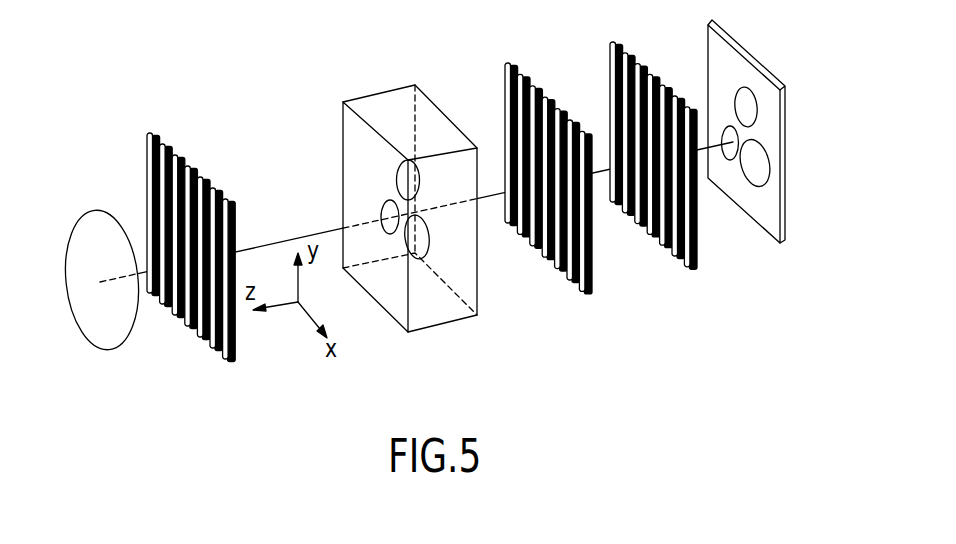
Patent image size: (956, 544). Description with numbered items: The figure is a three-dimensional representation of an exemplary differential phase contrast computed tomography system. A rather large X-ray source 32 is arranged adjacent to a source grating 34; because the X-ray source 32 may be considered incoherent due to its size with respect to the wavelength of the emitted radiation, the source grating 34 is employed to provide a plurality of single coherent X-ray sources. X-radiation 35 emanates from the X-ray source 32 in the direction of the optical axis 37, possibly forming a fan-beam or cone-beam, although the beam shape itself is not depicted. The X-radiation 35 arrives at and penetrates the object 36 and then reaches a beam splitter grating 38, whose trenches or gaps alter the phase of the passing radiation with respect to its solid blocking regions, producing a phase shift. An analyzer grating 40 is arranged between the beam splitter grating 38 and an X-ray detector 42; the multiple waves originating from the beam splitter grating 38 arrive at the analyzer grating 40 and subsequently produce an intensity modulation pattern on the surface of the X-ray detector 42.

The X-ray source 32 is at (110, 340).
The source grating 34 is at (215, 347).
The X-radiation 35 is at (416, 212).
The optical axis 37 is at (275, 242).
The object 36 is at (447, 312).
The beam splitter grating 38 is at (570, 277).
The analyzer grating 40 is at (662, 243).
The X-ray detector 42 is at (762, 232).